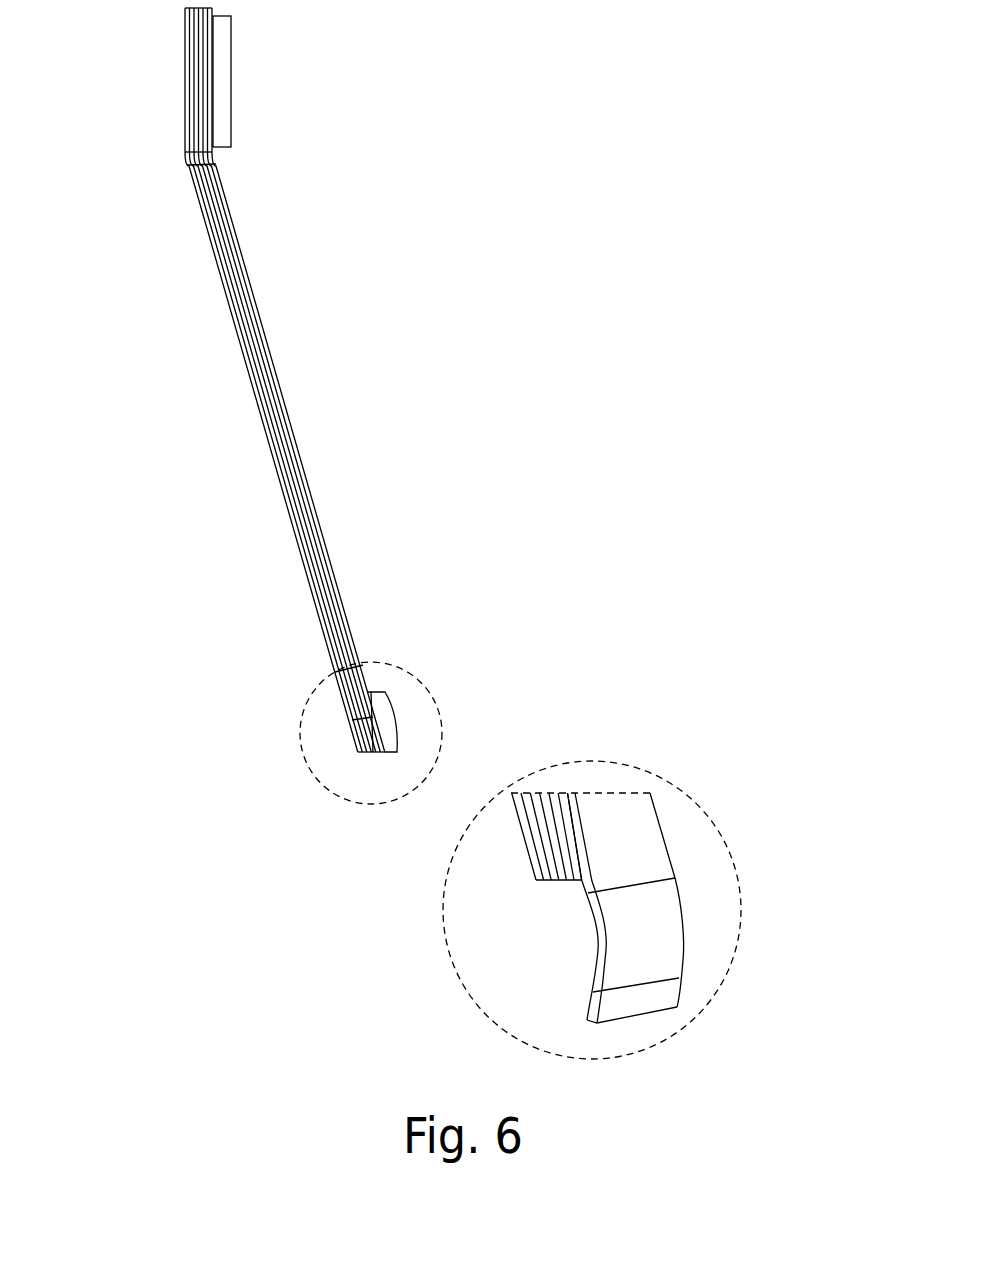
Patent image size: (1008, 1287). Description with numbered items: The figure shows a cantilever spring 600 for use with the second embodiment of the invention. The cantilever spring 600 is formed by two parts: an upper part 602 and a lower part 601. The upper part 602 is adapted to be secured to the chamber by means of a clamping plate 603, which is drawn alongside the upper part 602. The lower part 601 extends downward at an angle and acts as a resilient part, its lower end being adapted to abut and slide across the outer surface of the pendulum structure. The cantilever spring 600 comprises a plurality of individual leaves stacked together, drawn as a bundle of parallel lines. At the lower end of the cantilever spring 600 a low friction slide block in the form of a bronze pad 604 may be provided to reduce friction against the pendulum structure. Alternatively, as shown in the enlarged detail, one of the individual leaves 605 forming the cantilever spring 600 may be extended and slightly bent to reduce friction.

The cantilever spring 600 is at (500, 132).
The lower part 601 is at (277, 413).
The upper part 602 is at (195, 118).
The clamping plate 603 is at (222, 90).
The bronze pad 604 is at (385, 717).
The individual leaf 605 is at (658, 932).